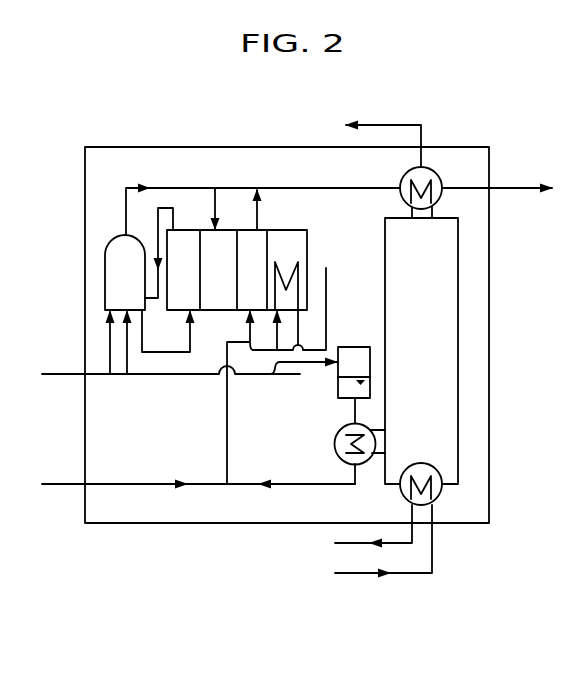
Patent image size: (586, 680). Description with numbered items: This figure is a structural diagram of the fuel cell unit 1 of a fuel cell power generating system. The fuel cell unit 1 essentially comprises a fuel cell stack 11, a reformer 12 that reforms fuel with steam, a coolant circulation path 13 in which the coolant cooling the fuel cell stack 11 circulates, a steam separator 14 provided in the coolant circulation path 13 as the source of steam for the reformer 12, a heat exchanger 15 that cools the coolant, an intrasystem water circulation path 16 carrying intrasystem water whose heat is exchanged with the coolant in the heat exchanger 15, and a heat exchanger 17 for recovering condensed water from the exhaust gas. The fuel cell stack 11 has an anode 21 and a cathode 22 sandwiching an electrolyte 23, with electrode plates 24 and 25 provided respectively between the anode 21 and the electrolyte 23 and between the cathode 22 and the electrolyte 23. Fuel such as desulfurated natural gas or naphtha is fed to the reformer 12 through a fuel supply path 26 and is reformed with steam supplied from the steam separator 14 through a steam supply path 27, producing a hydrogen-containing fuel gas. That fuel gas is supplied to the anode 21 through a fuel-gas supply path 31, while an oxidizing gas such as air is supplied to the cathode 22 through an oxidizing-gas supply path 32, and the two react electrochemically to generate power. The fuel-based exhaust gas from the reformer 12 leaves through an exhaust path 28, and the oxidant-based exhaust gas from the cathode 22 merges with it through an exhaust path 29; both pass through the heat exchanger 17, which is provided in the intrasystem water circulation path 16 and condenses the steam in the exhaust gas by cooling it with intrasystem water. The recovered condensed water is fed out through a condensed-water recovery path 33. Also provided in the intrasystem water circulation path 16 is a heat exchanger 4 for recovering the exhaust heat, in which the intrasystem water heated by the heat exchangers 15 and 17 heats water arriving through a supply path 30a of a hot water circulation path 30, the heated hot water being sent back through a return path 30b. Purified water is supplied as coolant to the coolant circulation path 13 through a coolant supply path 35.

The fuel cell unit 1 is at (488, 437).
The heat exchanger for recovering the exhaust heat 4 is at (440, 497).
The fuel cell stack 11 is at (213, 190).
The reformer 12 is at (105, 272).
The coolant circulation path 13 is at (272, 376).
The steam separator 14 is at (370, 362).
The heat exchanger 15 is at (335, 444).
The intrasystem water circulation path 16 is at (386, 283).
The heat exchanger for recovering the condensed water 17 is at (435, 170).
The anode 21 is at (190, 230).
The cathode 22 is at (245, 230).
The electrolyte 23 is at (227, 230).
The electrode plate 24 is at (216, 286).
The electrode plate 25 is at (240, 251).
The fuel supply path 26 is at (58, 373).
The steam supply path 27 is at (190, 376).
The exhaust path 28 is at (126, 207).
The exhaust path 29 is at (258, 215).
The hot water circulation path 30 is at (515, 623).
The supply path 30a is at (433, 563).
The return path 30b is at (402, 547).
The fuel-gas supply path 31 is at (167, 356).
The oxidizing-gas supply path 32 is at (326, 297).
The condensed-water recovery path 33 is at (393, 125).
The coolant supply path 35 is at (68, 484).